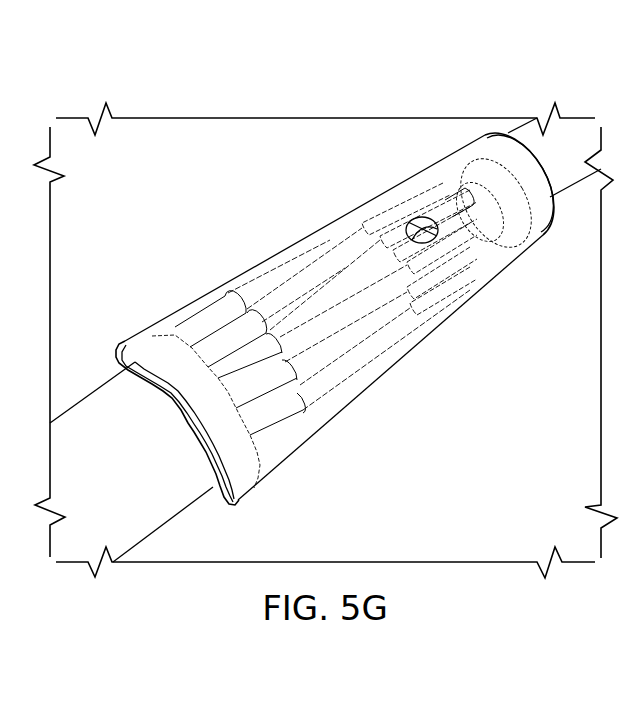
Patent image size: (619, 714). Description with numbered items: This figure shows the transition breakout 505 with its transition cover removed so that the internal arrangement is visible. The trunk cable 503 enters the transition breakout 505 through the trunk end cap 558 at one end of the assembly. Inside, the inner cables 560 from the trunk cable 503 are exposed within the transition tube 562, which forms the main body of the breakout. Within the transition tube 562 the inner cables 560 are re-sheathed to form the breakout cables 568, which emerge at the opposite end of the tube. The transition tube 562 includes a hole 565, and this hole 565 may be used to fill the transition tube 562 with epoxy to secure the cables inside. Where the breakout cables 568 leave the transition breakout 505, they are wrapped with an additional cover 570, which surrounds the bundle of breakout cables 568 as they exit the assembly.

The trunk cable 503 is at (573, 138).
The transition breakout 505 is at (280, 193).
The trunk end cap 558 is at (497, 134).
The inner cables 560 is at (438, 195).
The transition tube 562 is at (337, 221).
The hole 565 is at (417, 227).
The breakout cables 568 is at (212, 316).
The additional cover 570 is at (192, 521).